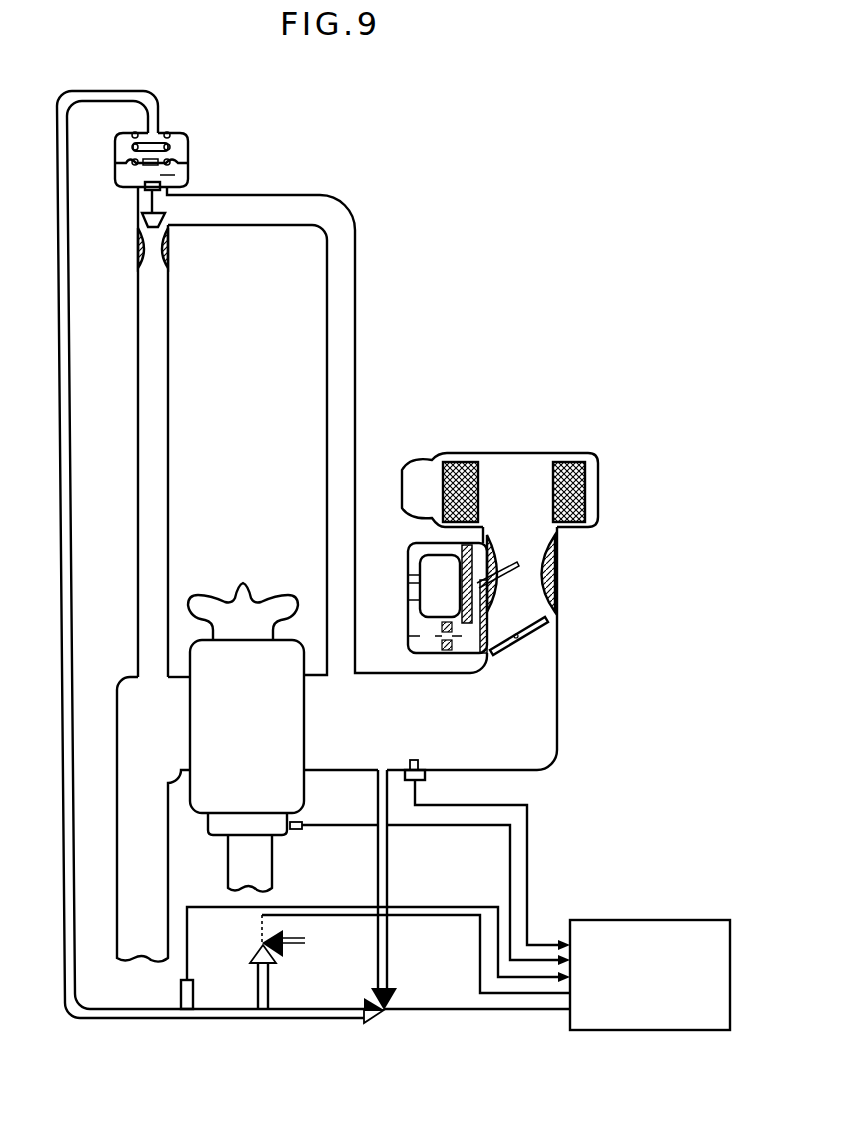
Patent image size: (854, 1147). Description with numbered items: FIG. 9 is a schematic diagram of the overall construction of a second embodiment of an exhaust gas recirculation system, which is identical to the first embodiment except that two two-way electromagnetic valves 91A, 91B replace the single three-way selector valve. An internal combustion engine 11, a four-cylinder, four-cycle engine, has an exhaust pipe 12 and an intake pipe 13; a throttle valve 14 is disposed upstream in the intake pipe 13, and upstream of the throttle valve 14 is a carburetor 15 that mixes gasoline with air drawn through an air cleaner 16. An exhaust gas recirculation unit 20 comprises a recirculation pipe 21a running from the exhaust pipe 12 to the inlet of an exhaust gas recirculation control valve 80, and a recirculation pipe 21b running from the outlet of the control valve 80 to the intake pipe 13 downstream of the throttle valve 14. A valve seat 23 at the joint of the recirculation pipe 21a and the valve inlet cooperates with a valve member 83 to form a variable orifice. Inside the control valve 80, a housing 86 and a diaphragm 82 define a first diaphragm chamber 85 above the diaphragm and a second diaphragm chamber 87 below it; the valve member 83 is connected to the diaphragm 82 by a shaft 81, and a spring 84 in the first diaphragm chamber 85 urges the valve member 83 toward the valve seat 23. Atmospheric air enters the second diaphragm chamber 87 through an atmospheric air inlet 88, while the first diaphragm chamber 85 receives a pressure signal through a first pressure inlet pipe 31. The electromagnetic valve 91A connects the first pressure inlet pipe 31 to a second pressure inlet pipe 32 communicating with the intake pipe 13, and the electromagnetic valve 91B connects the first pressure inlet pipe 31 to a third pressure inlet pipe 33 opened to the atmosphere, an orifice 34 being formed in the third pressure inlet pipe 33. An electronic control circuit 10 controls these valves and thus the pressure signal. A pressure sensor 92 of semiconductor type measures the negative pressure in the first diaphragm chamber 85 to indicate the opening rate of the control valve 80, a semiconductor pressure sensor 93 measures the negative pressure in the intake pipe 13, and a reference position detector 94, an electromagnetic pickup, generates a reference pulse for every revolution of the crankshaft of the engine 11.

The electronic control circuit 10 is at (664, 1037).
The internal combustion engine 11 is at (258, 752).
The exhaust pipe 12 is at (117, 760).
The intake pipe 13 is at (532, 765).
The throttle valve 14 is at (527, 632).
The carburetor 15 is at (428, 562).
The air cleaner 16 is at (515, 468).
The exhaust gas recirculation unit 20 is at (162, 432).
The recirculation pipe 21a is at (163, 400).
The recirculation pipe 21b is at (345, 360).
The valve seat 23 is at (172, 243).
The first pressure inlet pipe 31 is at (63, 728).
The second pressure inlet pipe 32 is at (387, 852).
The third pressure inlet pipe 33 is at (299, 947).
The orifice 34 is at (367, 985).
The exhaust gas recirculation control valve 80 is at (243, 147).
The shaft 81 is at (165, 208).
The diaphragm 82 is at (140, 167).
The valve member 83 is at (140, 242).
The spring 84 is at (167, 132).
The first diaphragm chamber 85 is at (122, 135).
The housing 86 is at (190, 160).
The second diaphragm chamber 87 is at (125, 178).
The atmospheric air inlet 88 is at (192, 180).
The electromagnetic valve 91A is at (376, 1016).
The electromagnetic valve 91B is at (258, 952).
The pressure sensor 92 is at (193, 993).
The semiconductor pressure sensor 93 is at (426, 775).
The reference position detector 94 is at (302, 831).